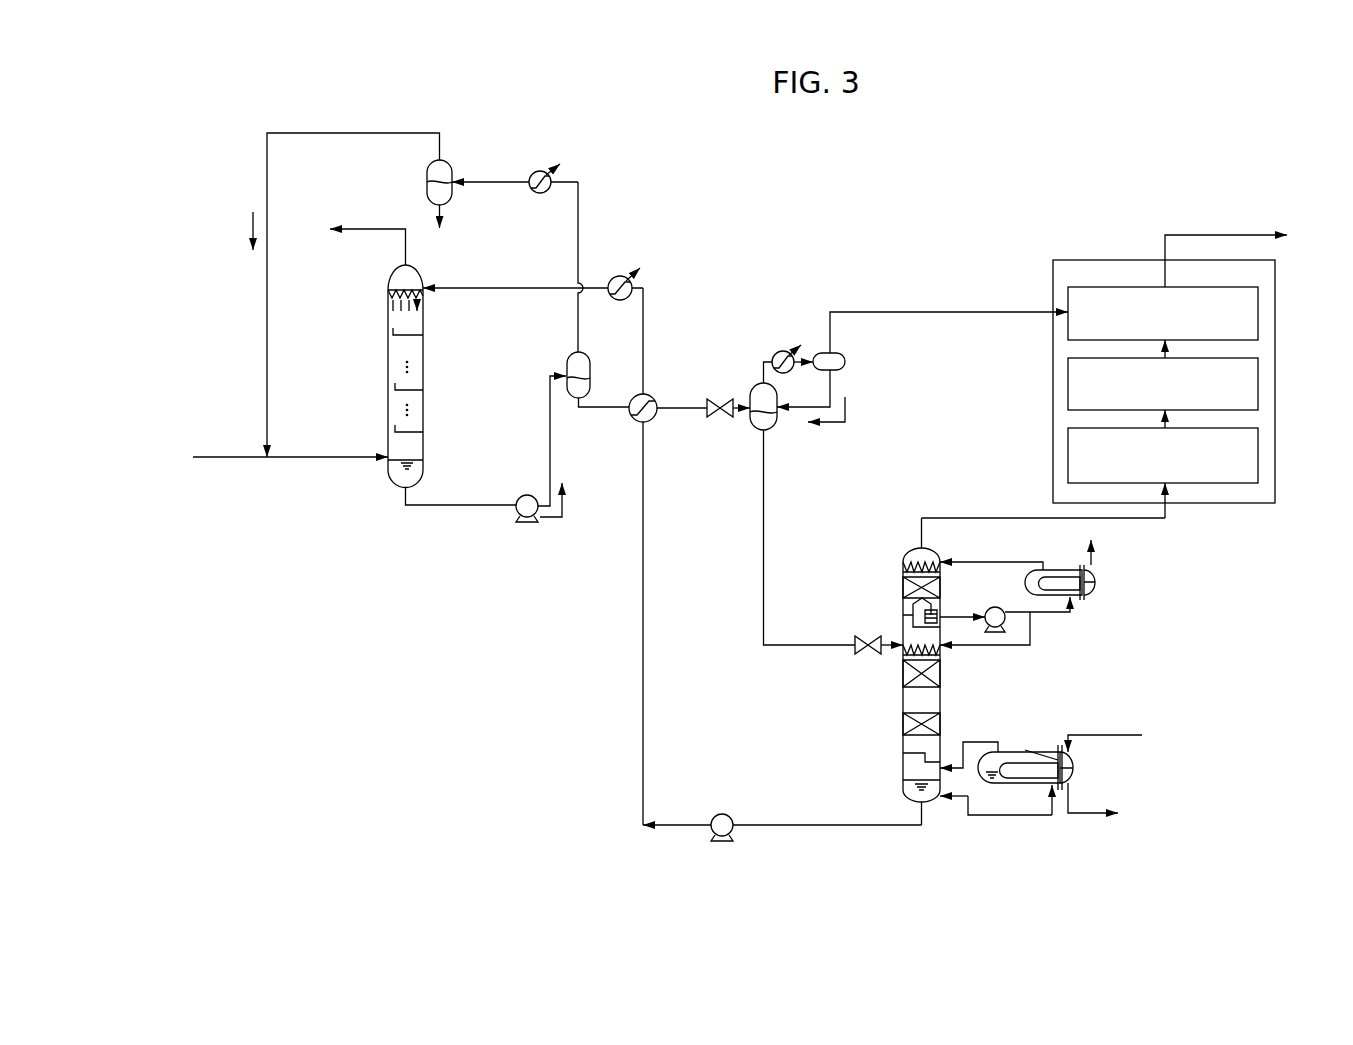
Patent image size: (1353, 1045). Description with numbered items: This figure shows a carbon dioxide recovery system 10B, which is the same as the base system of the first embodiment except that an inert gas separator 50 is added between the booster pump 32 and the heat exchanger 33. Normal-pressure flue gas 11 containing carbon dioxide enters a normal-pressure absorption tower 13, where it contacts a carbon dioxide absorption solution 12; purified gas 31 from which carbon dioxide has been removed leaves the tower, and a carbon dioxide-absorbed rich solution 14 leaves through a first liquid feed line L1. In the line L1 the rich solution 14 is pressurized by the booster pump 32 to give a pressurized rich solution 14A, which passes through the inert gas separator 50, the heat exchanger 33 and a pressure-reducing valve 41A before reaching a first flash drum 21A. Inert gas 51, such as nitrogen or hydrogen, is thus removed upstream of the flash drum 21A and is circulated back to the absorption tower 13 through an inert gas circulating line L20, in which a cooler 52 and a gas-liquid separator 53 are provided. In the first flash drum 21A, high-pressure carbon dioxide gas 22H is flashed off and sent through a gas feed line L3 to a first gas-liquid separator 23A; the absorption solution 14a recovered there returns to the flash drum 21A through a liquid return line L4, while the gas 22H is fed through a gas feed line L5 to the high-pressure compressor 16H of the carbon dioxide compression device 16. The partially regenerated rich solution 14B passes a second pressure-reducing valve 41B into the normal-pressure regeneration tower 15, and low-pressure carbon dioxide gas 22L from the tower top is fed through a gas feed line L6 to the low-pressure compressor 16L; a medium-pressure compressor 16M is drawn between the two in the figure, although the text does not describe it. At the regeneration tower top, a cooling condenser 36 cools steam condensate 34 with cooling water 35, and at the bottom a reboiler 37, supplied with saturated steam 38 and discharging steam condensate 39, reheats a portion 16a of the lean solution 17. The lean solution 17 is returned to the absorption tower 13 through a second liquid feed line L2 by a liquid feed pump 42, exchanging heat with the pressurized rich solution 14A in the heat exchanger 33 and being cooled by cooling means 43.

The CO2 recovery system 10B is at (835, 212).
The normal-pressure flue gas 11 is at (374, 472).
The CO2 absorption solution 12 is at (385, 292).
The normal-pressure absorption tower 13 is at (376, 354).
The rich solution 14 is at (498, 516).
The pressurized rich solution 14A is at (556, 522).
The partially regenerated rich solution 14B is at (750, 460).
The absorption solution 14a is at (838, 426).
The normal-pressure regeneration tower 15 is at (945, 690).
The CO2 compression device 16 is at (1240, 505).
The high-pressure compressor 16H is at (1258, 313).
The medium-pressure compressor 16M is at (1258, 385).
The low-pressure compressor 16L is at (1258, 455).
The portion of the lean solution 16a is at (1045, 827).
The lean solution 17 is at (820, 837).
The first flash drum 21A is at (750, 378).
The high-pressure CO2 gas 22H is at (945, 303).
The low-pressure CO2 gas 22L is at (1000, 507).
The first gas-liquid separator 23A is at (845, 362).
The purified gas 31 is at (375, 228).
The booster pump 32 is at (521, 493).
The heat exchanger 33 is at (598, 379).
The steam condensate 34 is at (940, 622).
The cooling water 35 is at (1091, 600).
The cooling condenser 36 is at (1062, 568).
The reboiler 37 is at (1026, 748).
The saturated steam 38 is at (1130, 747).
The steam condensate 39 is at (1108, 827).
The pressure-reducing valve 41A is at (706, 397).
The pressure-reducing valve 41B is at (867, 635).
The liquid feed pump 42 is at (724, 842).
The cooling means 43 is at (614, 303).
The inert gas separator 50 is at (565, 357).
The inert gas 51 is at (587, 213).
The cooler 52 is at (535, 195).
The gas-liquid separator 53 is at (452, 185).
The first liquid feed line L1 is at (425, 509).
The second liquid feed line L2 is at (763, 823).
The gas feed line L3 is at (770, 350).
The liquid return line L4 is at (800, 410).
The gas feed line L5 is at (838, 312).
The gas feed line L6 is at (970, 520).
The inert gas circulating line L20 is at (268, 163).